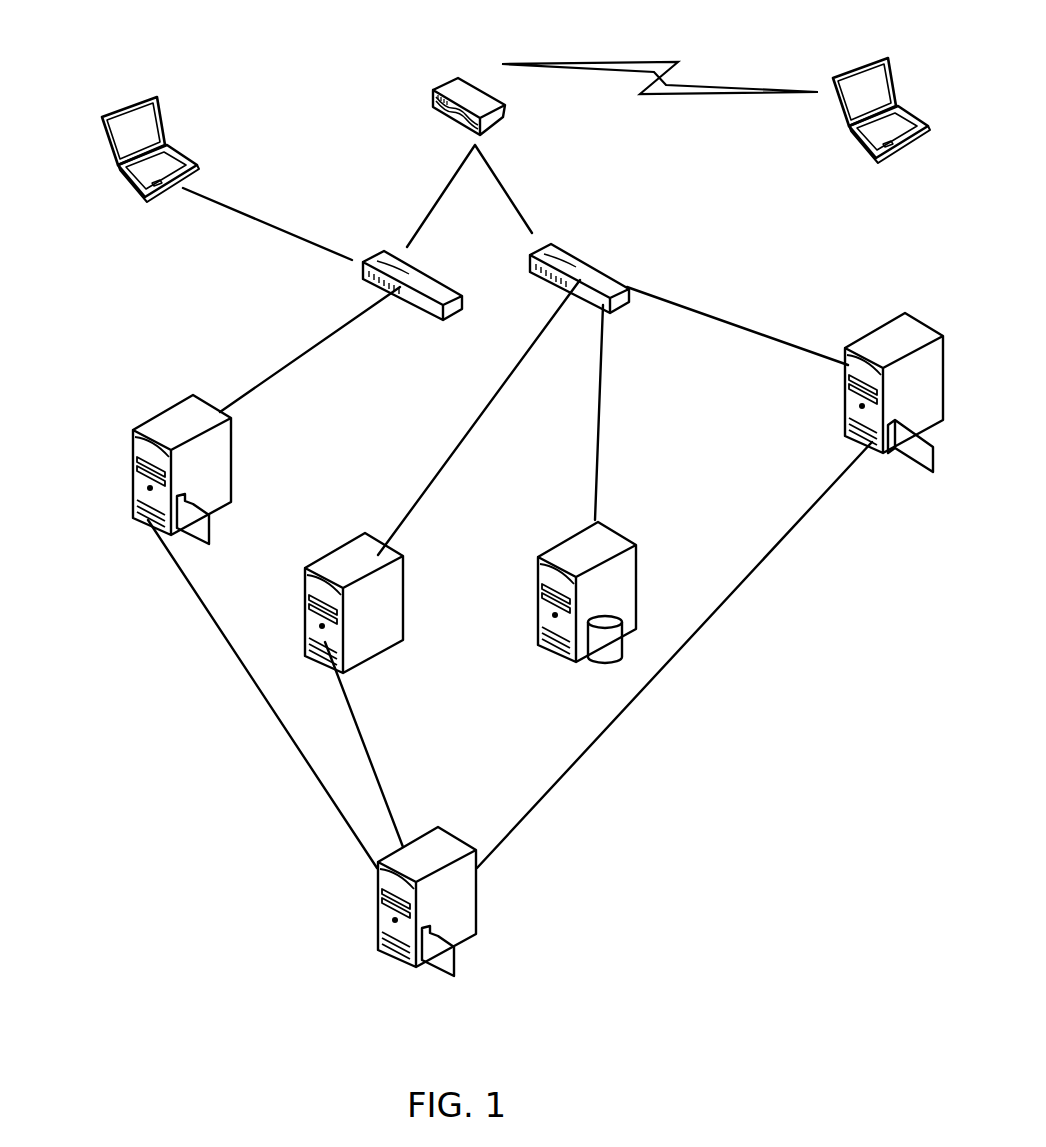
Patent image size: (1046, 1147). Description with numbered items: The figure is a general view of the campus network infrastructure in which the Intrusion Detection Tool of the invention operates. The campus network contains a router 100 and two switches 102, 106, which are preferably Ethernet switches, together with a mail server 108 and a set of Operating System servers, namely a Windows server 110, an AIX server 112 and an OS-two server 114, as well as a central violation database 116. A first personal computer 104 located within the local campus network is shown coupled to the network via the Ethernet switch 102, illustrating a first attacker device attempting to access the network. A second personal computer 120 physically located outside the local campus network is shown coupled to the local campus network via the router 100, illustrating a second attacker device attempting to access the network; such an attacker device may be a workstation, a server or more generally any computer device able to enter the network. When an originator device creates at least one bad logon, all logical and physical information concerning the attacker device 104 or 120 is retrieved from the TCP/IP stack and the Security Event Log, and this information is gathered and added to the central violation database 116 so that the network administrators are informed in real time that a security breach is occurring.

The router 100 is at (455, 87).
The Ethernet switch 102 is at (378, 255).
The first personal computer 104 is at (137, 103).
The switch 106 is at (593, 280).
The mail server 108 is at (885, 337).
The Windows operating system server 110 is at (182, 413).
The AIX operating system server 112 is at (362, 550).
The OS/2 operating system server 114 is at (597, 540).
The central violation database 116 is at (465, 895).
The second personal computer 120 is at (848, 72).